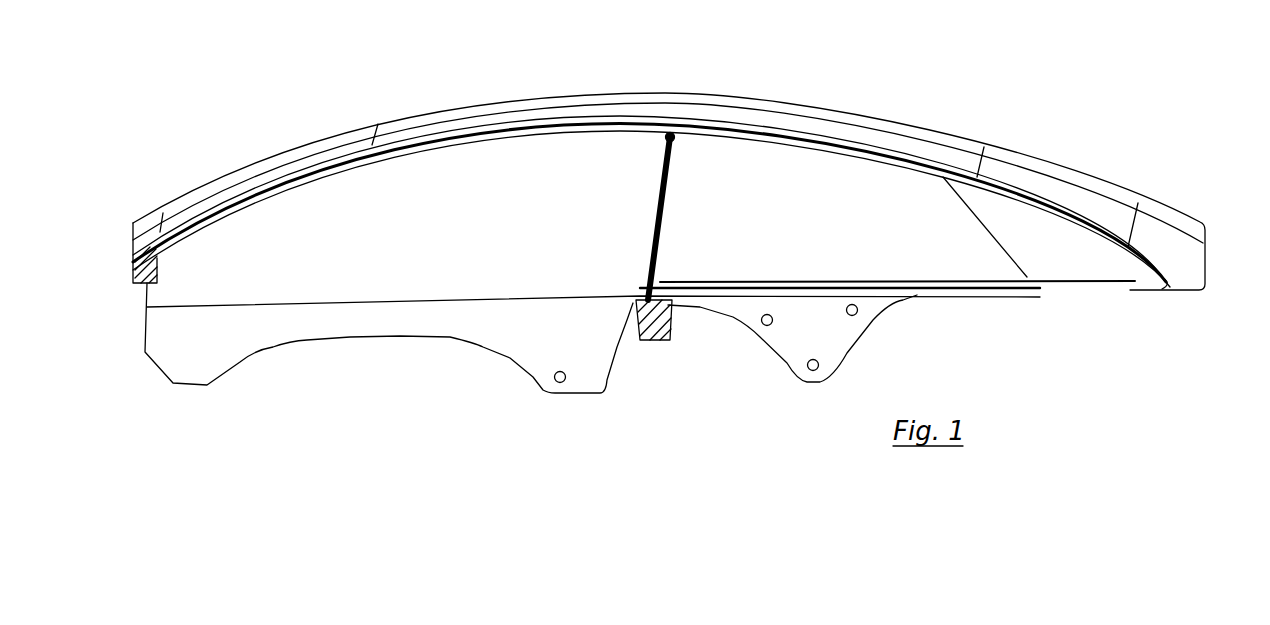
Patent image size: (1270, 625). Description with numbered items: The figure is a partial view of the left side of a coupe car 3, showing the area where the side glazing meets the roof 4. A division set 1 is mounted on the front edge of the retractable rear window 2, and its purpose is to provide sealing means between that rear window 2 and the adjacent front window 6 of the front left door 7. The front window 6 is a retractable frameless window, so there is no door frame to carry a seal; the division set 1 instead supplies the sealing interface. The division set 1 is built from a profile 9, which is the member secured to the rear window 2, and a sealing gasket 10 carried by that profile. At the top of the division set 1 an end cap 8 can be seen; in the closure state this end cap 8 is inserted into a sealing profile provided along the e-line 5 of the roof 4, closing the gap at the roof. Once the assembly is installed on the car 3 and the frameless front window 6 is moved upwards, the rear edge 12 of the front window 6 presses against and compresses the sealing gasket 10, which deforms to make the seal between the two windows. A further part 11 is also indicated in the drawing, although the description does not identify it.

The division set 1 is at (660, 222).
The retractable rear window 2 is at (900, 257).
The coupe car 3 is at (620, 462).
The roof 4 is at (803, 123).
The e-line 5 is at (840, 146).
The front window 6 is at (430, 277).
The front left door 7 is at (613, 430).
The end cap 8 is at (668, 170).
The profile 9 is at (670, 137).
The sealing gasket 10 is at (658, 200).
The guide rod 11 is at (655, 262).
The rear edge 12 is at (660, 222).